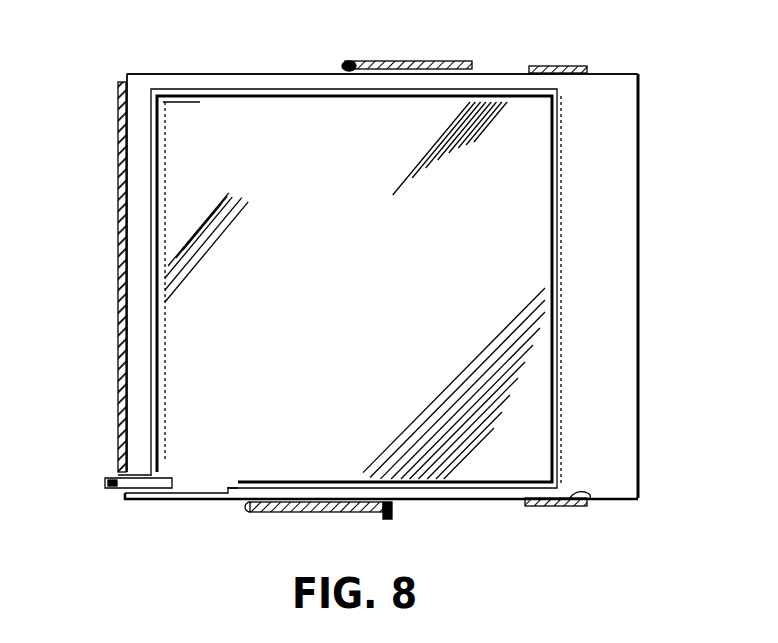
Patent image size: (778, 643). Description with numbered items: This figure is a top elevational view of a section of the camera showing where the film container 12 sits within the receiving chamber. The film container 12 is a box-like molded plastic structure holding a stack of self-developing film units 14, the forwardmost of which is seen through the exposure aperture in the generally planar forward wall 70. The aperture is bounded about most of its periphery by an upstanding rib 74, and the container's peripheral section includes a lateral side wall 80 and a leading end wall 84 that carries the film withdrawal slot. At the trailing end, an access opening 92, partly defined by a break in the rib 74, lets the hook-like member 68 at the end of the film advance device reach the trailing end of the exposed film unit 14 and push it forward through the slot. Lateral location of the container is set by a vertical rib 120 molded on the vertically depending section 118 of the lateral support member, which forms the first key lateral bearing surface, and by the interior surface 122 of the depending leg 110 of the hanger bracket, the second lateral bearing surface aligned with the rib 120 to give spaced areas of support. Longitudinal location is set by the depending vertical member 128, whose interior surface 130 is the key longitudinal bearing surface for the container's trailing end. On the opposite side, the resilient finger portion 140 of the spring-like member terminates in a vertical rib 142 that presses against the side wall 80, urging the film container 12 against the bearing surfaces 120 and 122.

The film container 12 is at (418, 258).
The film unit 14 is at (336, 287).
The hook-like member 68 is at (112, 478).
The forward wall 70 is at (620, 117).
The upstanding rib 74 is at (268, 88).
The lateral side wall 80 is at (217, 73).
The leading end wall 84 is at (640, 210).
The access opening 92 is at (188, 490).
The depending leg 110 is at (540, 67).
The vertically depending section 118 is at (318, 508).
The vertical rib 120 is at (250, 505).
The interior surface 122 is at (585, 500).
The depending vertical member 128 is at (120, 208).
The interior surface 130 is at (128, 96).
The resilient finger portion 140 is at (400, 62).
The vertical rib 142 is at (340, 66).